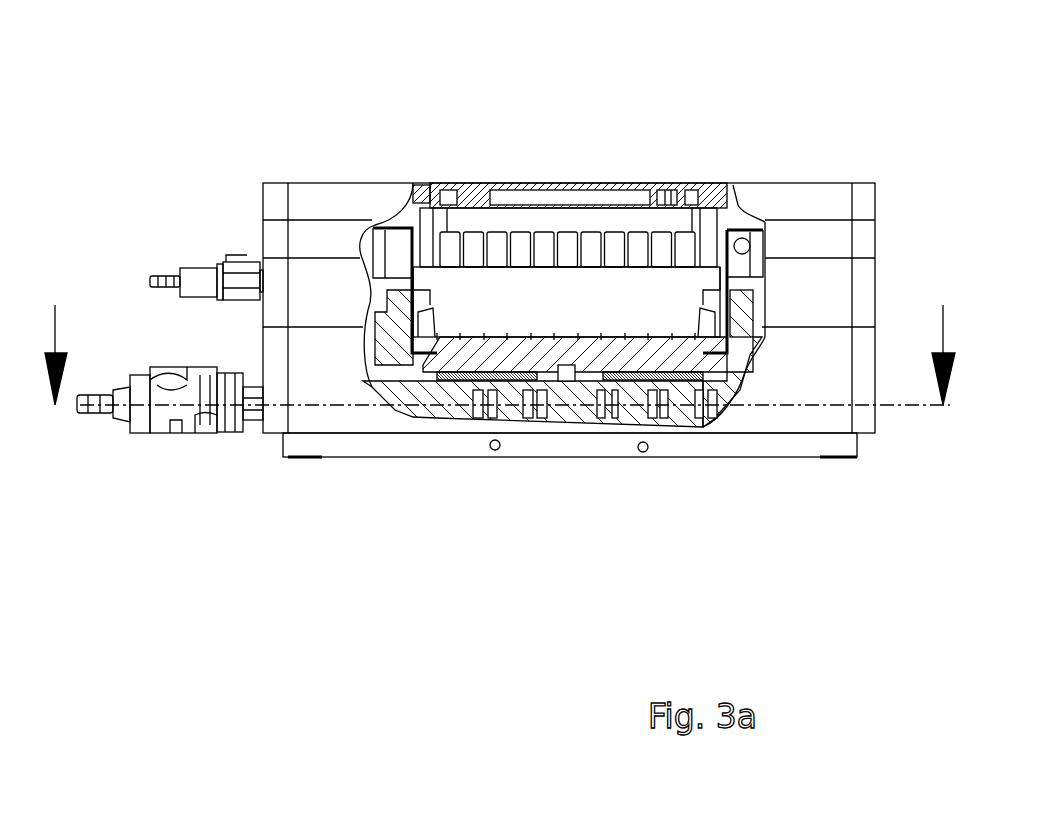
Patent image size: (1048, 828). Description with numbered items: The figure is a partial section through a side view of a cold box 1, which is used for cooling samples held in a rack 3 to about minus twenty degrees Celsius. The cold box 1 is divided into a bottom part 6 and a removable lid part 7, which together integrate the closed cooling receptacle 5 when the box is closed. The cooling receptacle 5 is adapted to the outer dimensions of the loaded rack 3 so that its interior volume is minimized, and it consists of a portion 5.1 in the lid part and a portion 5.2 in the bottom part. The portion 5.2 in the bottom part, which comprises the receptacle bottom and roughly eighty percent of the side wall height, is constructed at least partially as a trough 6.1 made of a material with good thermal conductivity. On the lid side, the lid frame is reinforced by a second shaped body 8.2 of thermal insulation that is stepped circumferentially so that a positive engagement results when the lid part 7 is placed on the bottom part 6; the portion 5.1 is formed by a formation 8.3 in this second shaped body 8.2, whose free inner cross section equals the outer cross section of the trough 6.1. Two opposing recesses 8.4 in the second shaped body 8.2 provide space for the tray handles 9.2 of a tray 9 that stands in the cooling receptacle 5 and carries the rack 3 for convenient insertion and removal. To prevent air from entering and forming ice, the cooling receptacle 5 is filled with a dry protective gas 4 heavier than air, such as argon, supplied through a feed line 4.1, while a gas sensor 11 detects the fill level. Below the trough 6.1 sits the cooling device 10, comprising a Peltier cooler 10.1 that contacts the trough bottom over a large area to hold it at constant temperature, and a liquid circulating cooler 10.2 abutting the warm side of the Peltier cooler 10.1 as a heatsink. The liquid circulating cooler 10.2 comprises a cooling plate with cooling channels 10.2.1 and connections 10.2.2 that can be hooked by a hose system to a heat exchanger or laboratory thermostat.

The cold box 1 is at (983, 104).
The rack 3 is at (657, 307).
The protective gas 4 is at (477, 222).
The feed line 4.1 is at (193, 272).
The cooling receptacle 5 is at (1000, 240).
The portion of the cooling receptacle in the lid part 5.1 is at (760, 252).
The portion of the cooling receptacle in the bottom part 5.2 is at (760, 302).
The bottom part 6 is at (880, 258).
The trough 6.1 is at (750, 348).
The lid part 7 is at (880, 185).
The second shaped body 8.2 is at (308, 240).
The formation 8.3 is at (398, 255).
The recess 8.4 is at (777, 220).
The tray 9 is at (717, 352).
The tray handle 9.2 is at (388, 228).
The cooling device 10 is at (662, 597).
The Peltier cooler 10.1 is at (633, 375).
The liquid circulating cooler 10.2 is at (537, 535).
The cooling channel 10.2.1 is at (517, 403).
The connection 10.2.2 is at (203, 413).
The gas sensor 11 is at (745, 240).